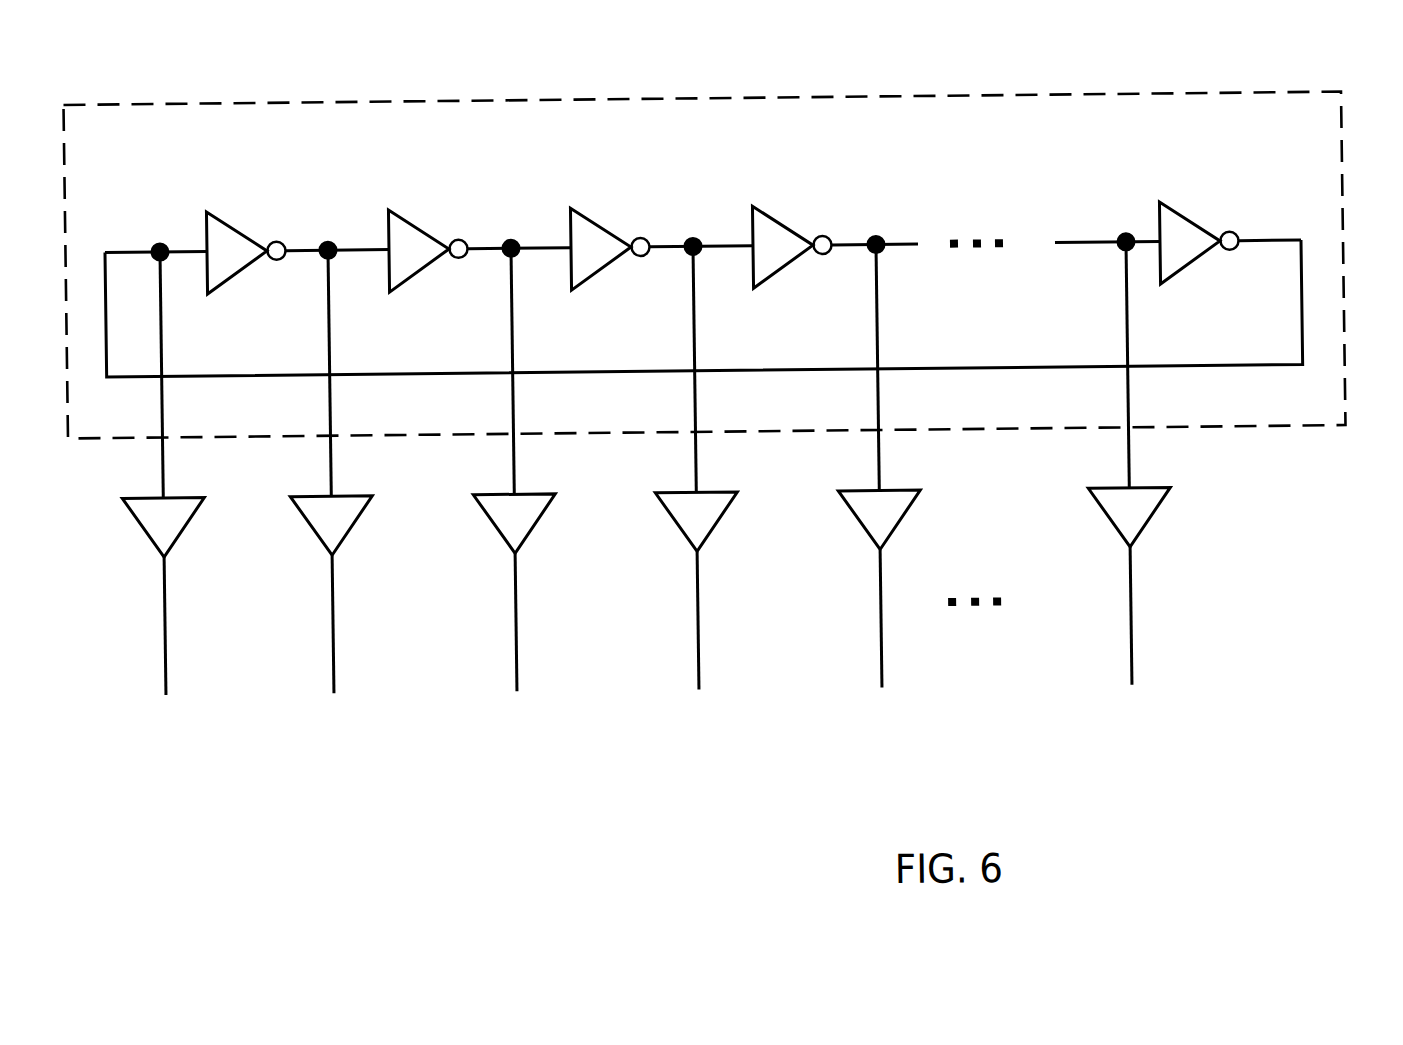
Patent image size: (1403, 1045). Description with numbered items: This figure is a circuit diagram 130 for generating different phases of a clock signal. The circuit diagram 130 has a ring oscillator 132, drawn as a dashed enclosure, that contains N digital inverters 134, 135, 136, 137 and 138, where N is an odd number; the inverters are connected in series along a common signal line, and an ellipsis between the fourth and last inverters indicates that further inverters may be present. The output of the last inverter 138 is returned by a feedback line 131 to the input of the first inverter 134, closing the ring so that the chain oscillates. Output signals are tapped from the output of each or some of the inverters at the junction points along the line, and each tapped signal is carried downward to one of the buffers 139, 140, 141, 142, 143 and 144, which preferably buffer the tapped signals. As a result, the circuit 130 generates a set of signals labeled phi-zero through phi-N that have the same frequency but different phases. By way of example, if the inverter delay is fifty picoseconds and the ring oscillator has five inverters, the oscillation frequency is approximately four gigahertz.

The circuit diagram 130 is at (146, 793).
The feedback line 131 is at (1219, 376).
The ring oscillator 132 is at (1068, 104).
The digital inverter 134 is at (234, 229).
The digital inverter 135 is at (426, 233).
The digital inverter 136 is at (581, 222).
The digital inverter 137 is at (786, 232).
The digital inverter 138 is at (1201, 241).
The buffer 139 is at (138, 529).
The buffer 140 is at (305, 524).
The buffer 141 is at (489, 525).
The buffer 142 is at (671, 525).
The buffer 143 is at (853, 524).
The buffer 144 is at (1100, 519).